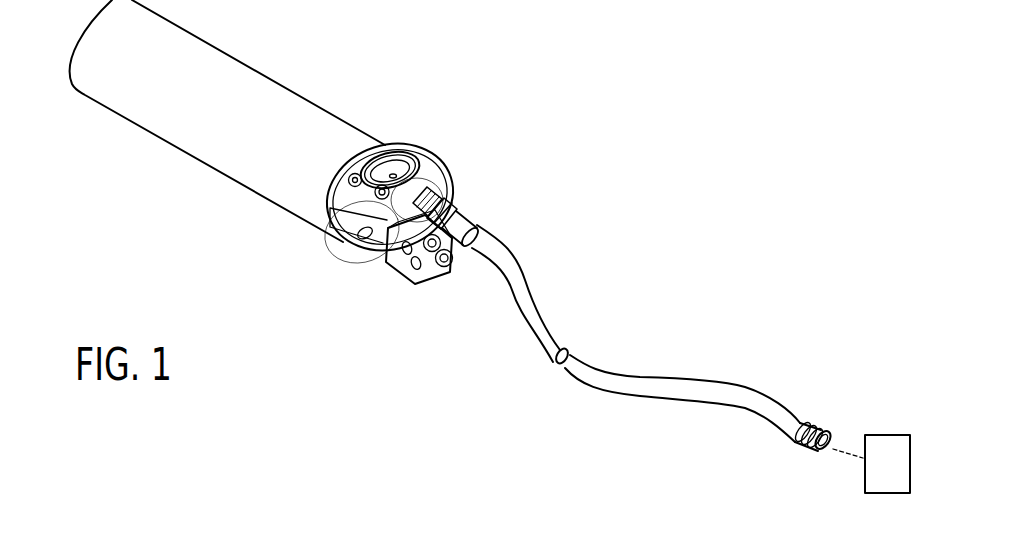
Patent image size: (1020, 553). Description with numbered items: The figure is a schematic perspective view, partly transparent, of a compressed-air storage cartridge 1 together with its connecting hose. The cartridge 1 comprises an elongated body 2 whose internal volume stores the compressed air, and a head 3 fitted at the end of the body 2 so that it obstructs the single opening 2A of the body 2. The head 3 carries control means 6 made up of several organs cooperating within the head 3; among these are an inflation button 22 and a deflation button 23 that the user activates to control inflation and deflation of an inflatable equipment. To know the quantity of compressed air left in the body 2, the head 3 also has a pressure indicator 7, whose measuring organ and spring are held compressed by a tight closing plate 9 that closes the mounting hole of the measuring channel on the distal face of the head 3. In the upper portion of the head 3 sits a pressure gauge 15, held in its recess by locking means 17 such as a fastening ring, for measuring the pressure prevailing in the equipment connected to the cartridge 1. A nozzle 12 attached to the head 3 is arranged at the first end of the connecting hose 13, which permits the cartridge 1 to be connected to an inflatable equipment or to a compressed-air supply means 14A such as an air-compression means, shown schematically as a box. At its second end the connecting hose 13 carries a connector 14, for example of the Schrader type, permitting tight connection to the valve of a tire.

The compressed-air storage cartridge 1 is at (467, 113).
The body 2 is at (168, 113).
The single opening 2A is at (385, 147).
The head 3 is at (457, 177).
The control means 6 is at (439, 288).
The pressure indicator 7 is at (351, 250).
The closing plate 9 is at (384, 240).
The nozzle 12 is at (485, 212).
The connecting hose 13 is at (635, 380).
The connector 14 is at (807, 427).
The compressed-air supply means 14A is at (873, 487).
The pressure gauge 15 is at (402, 144).
The locking means 17 is at (335, 204).
The inflation button 22 is at (424, 266).
The deflation button 23 is at (454, 274).